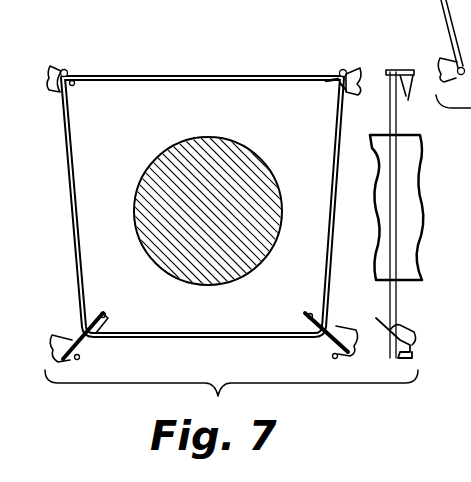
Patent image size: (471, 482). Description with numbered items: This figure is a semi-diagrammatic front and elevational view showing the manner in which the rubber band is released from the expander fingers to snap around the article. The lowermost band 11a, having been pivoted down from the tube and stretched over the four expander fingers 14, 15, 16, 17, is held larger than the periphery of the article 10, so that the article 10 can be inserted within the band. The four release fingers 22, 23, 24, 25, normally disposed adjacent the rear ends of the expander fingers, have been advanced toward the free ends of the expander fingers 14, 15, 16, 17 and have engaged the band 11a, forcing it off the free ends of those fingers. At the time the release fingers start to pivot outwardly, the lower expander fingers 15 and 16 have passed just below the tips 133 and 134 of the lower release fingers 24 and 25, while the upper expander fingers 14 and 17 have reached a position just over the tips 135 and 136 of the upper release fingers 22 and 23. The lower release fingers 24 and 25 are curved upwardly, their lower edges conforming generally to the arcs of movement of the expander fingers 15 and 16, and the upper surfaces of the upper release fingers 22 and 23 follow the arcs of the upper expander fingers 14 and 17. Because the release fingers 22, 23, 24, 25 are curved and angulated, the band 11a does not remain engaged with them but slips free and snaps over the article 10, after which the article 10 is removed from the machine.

The article 10 is at (248, 165).
The lowermost band 11a is at (385, 226).
The expander finger 14 is at (345, 70).
The expander finger 15 is at (398, 362).
The expander finger 16 is at (80, 358).
The expander finger 17 is at (67, 70).
The release finger 22 is at (341, 91).
The release finger 23 is at (47, 95).
The release finger 24 is at (358, 329).
The release finger 25 is at (448, 66).
The tip 133 is at (311, 314).
The tip 134 is at (103, 312).
The tip 135 is at (332, 84).
The tip 136 is at (74, 88).